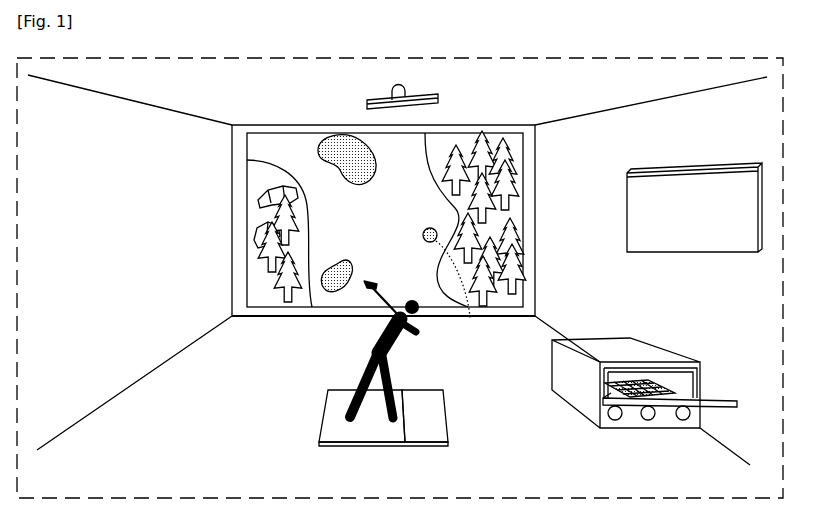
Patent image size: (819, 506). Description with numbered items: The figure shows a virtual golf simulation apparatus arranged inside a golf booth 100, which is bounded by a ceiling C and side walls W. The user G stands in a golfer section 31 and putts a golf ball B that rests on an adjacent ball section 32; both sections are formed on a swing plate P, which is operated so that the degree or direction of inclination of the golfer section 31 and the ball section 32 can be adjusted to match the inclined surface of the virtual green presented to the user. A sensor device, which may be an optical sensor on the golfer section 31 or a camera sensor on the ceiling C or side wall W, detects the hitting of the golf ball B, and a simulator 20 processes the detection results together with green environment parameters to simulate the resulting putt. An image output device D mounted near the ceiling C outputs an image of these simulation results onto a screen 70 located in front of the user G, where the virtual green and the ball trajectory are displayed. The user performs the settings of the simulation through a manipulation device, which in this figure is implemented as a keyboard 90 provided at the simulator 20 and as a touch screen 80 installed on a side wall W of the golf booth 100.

The golf booth 100 is at (752, 58).
The screen 70 is at (508, 125).
The touch screen 80 is at (735, 167).
The simulator 20 is at (687, 362).
The keyboard 90 is at (663, 385).
The golfer section 31 is at (332, 423).
The ball section 32 is at (433, 423).
The ceiling C is at (397, 100).
The side wall W is at (393, 338).
The image output device D is at (415, 95).
The golf ball B is at (423, 236).
The user G is at (362, 372).
The swing plate P is at (382, 447).